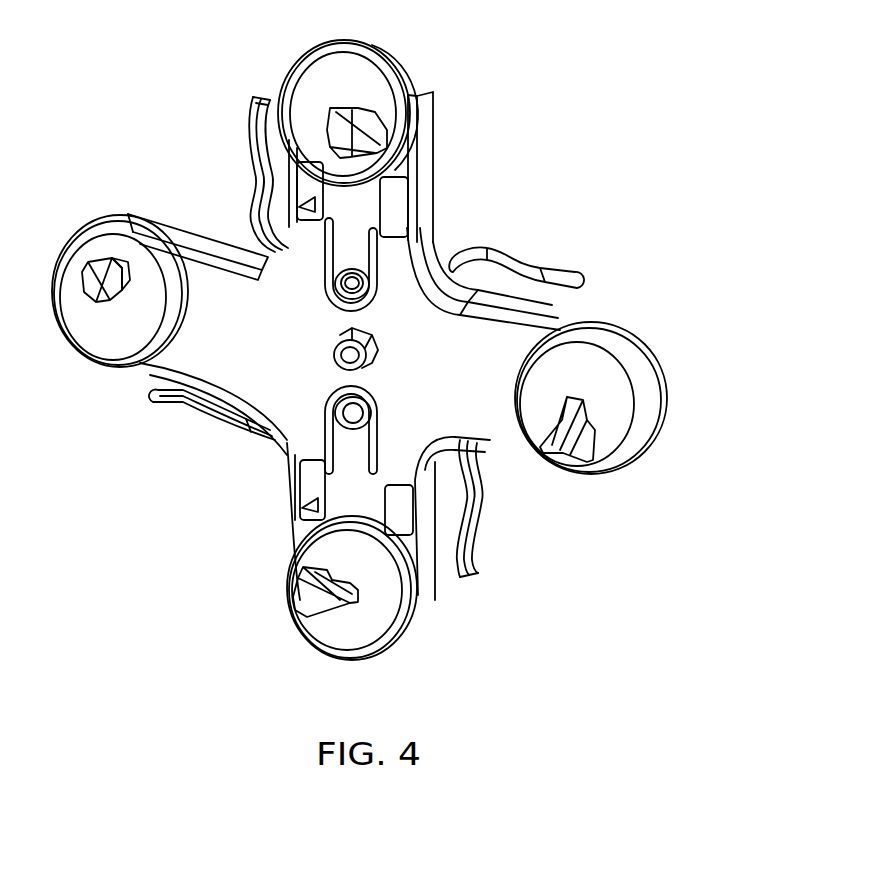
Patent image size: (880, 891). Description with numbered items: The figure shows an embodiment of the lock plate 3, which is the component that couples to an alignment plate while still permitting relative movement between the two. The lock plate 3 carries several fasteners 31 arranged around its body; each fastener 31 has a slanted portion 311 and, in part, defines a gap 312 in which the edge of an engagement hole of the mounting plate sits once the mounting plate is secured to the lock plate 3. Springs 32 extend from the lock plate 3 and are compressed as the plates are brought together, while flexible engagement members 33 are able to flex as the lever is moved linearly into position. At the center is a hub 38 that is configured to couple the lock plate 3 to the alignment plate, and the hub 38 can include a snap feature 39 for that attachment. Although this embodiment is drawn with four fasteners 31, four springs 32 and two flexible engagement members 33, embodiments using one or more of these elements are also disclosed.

The lock plate 3 is at (480, 100).
The fasteners 31 is at (382, 130).
The slanted portion 311 is at (97, 273).
The gap 312 is at (123, 273).
The springs 32 is at (540, 265).
The flexible engagement members 33 is at (375, 276).
The hub 38 is at (362, 362).
The snap feature 39 is at (340, 358).